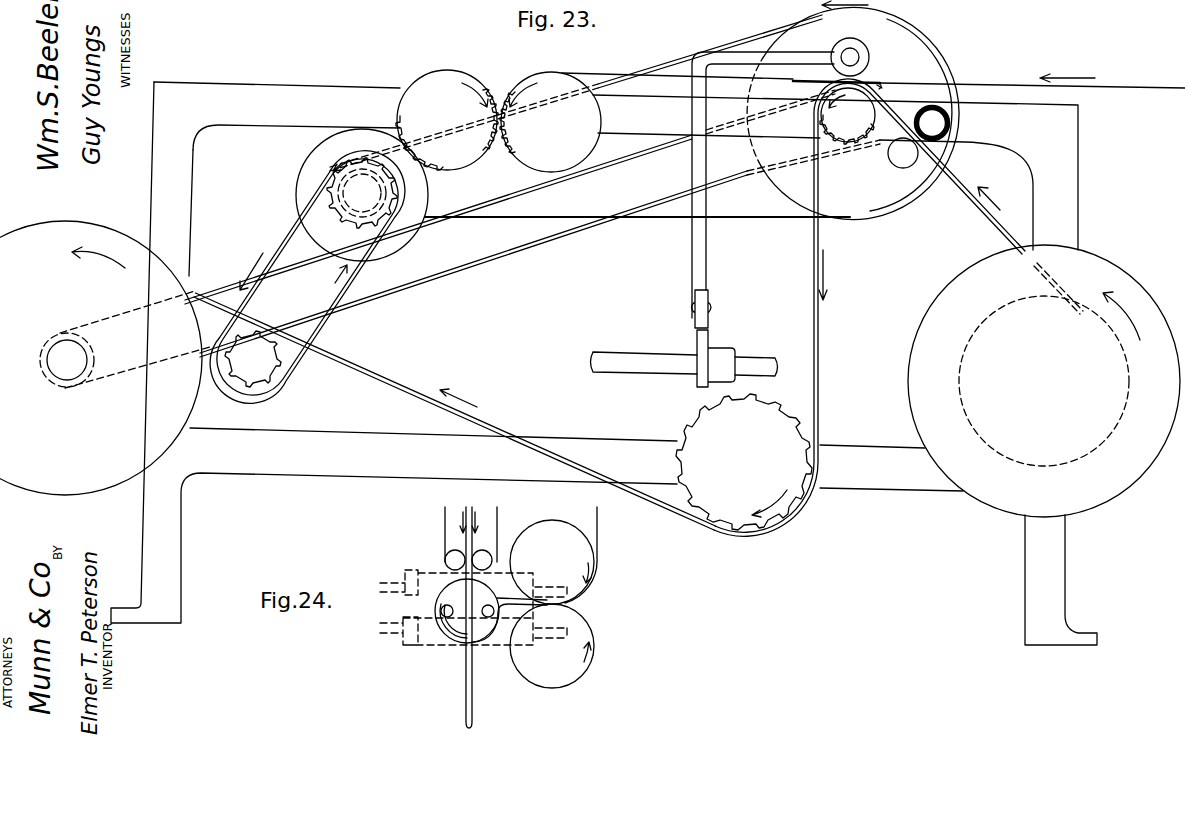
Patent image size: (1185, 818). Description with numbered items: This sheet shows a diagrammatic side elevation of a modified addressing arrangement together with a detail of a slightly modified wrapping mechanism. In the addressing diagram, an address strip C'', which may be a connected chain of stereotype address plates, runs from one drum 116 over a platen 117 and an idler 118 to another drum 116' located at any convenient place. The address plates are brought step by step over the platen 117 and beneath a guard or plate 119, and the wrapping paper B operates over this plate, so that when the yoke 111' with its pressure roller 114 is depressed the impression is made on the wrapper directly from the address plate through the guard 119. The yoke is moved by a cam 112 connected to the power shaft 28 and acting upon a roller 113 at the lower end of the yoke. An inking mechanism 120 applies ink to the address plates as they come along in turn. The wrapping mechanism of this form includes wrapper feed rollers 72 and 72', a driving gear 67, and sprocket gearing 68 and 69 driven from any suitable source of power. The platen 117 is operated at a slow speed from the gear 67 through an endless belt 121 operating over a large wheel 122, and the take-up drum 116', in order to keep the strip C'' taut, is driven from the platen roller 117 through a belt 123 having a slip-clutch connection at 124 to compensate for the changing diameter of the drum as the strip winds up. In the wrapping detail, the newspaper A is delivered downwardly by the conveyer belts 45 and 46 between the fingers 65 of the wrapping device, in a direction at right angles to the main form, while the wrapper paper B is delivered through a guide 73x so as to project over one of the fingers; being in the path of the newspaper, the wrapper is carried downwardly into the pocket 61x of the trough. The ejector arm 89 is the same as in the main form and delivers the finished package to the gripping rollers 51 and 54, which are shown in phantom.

In FIG. 23, the drum 116' is at (101, 372).
In FIG. 23, the slip-clutch connection 124 is at (58, 378).
In FIG. 23, the driving gear 67 is at (349, 195).
In FIG. 23, the sprocket gearing 68 is at (330, 207).
In FIG. 23, the sprocket gearing 69 is at (278, 372).
In FIG. 23, the belt 123 is at (452, 264).
In FIG. 23, the endless belt 121 is at (660, 220).
In FIG. 23, the wrapper feed roller 72' is at (447, 110).
In FIG. 24, the wrapper feed roller 72' is at (552, 550).
In FIG. 23, the wrapper feed roller 72 is at (550, 112).
In FIG. 24, the wrapper feed roller 72 is at (565, 646).
In FIG. 23, the yoke 111' is at (743, 160).
In FIG. 23, the roller 113 is at (707, 306).
In FIG. 23, the cam 112 is at (712, 344).
In FIG. 23, the power shaft 28 is at (622, 365).
In FIG. 23, the large wheel 122 is at (918, 33).
In FIG. 23, the pressure roller 114 is at (862, 50).
In FIG. 23, the guard or plate 119 is at (878, 85).
In FIG. 23, the platen 117 is at (872, 132).
In FIG. 23, the inking mechanism 120 is at (942, 124).
In FIG. 23, the address strip C'' is at (638, 307).
In FIG. 23, the idler 118 is at (729, 514).
In FIG. 23, the drum 116 is at (1044, 387).
In FIG. 23, the wrapping paper B is at (1005, 86).
In FIG. 24, the wrapping paper B is at (599, 522).
In FIG. 24, the conveyer belt 45 is at (443, 522).
In FIG. 24, the conveyer belt 46 is at (497, 513).
In FIG. 24, the newspaper A is at (445, 580).
In FIG. 24, the fingers or prongs 65 is at (440, 640).
In FIG. 24, the ejector arm 89 is at (446, 650).
In FIG. 24, the guide 73x is at (497, 590).
In FIG. 24, the pocket of the trough 61x is at (473, 690).
In FIG. 24, the roller 51 is at (403, 592).
In FIG. 24, the roller 54 is at (403, 640).